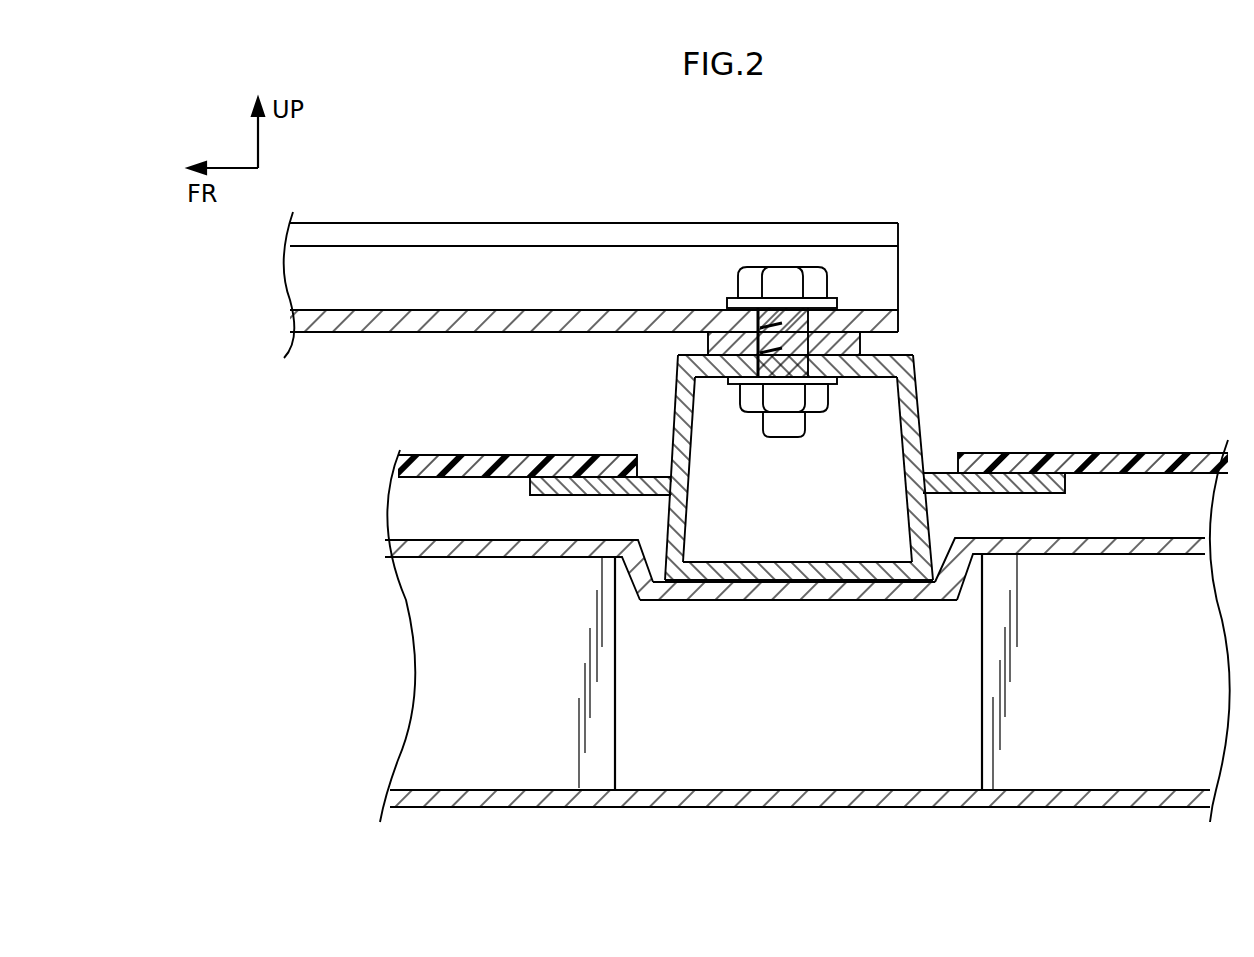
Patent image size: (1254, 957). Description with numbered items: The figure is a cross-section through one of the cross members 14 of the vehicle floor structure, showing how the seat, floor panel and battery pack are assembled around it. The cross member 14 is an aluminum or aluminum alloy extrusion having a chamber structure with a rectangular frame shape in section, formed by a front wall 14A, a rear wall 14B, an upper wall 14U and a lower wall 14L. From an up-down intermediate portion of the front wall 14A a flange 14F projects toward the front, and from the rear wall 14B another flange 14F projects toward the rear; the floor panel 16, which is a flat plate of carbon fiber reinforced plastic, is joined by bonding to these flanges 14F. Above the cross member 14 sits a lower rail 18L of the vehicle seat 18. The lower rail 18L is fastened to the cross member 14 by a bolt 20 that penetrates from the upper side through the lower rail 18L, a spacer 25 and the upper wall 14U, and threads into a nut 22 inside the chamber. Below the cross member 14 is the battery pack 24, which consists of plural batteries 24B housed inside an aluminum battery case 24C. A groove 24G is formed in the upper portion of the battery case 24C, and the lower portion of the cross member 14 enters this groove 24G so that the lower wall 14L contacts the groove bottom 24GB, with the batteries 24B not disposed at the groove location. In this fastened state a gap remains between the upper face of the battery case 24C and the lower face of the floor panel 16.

The lower rail 18L is at (800, 210).
The vehicle seat 18 is at (621, 229).
The bolt 20 is at (817, 284).
The spacer 25 is at (850, 345).
The cross member 14 is at (832, 459).
The front wall 14A is at (673, 418).
The rear wall 14B is at (931, 432).
The upper wall 14U is at (712, 379).
The lower wall 14L is at (750, 562).
The flange 14F is at (590, 497).
The floor panel 16 is at (495, 455).
The nut 22 is at (817, 409).
The battery pack 24 is at (797, 715).
The groove 24G is at (798, 630).
The groove bottom 24GB is at (812, 602).
The battery 24B is at (608, 706).
The battery case 24C is at (805, 809).